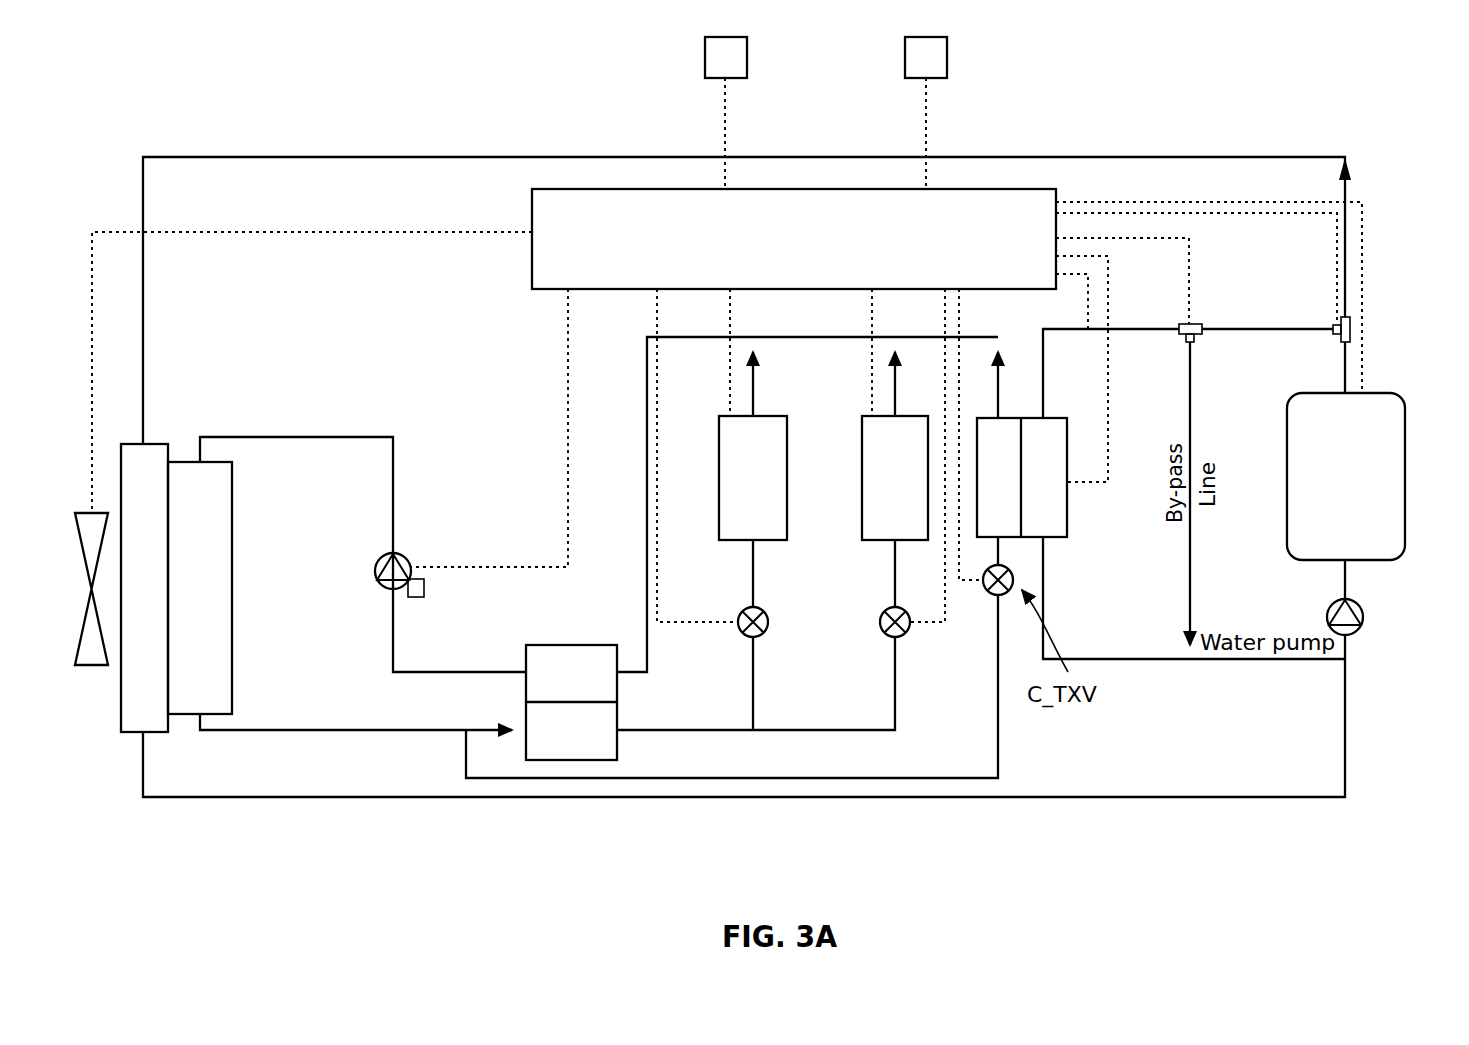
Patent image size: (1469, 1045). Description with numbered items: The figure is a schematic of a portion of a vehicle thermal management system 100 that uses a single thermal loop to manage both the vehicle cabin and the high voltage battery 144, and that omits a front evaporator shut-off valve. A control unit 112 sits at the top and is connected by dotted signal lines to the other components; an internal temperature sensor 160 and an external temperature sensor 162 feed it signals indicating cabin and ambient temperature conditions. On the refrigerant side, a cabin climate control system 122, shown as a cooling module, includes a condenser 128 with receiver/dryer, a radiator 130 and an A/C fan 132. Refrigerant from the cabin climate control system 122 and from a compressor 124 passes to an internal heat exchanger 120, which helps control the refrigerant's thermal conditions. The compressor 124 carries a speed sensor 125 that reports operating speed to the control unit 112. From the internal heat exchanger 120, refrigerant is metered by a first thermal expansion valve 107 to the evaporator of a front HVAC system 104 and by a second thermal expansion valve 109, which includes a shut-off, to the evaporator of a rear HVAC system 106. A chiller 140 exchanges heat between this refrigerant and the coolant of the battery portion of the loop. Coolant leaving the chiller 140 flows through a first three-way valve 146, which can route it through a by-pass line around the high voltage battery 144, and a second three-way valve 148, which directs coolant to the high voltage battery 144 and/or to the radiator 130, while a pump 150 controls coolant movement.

The thermal management system 100 is at (1024, 64).
The control unit 112 is at (632, 189).
The internal temperature sensor 160 is at (705, 45).
The external temperature sensor 162 is at (905, 45).
The radiator 130 is at (147, 444).
The A/C fan 132 is at (95, 513).
The cabin climate control system 122 is at (174, 424).
The condenser 128 is at (232, 667).
The compressor 124 is at (384, 556).
The speed sensor 125 is at (424, 588).
The internal heat exchanger 120 is at (572, 645).
The front HVAC system 104 is at (740, 416).
The rear HVAC system 106 is at (903, 416).
The first thermal expansion valve 107 is at (742, 612).
The second thermal expansion valve 109 is at (883, 612).
The chiller 140 is at (1055, 418).
The first three-way valve 146 is at (1186, 322).
The second three-way valve 148 is at (1352, 327).
The high voltage battery 144 is at (1373, 393).
The pump 150 is at (1358, 632).